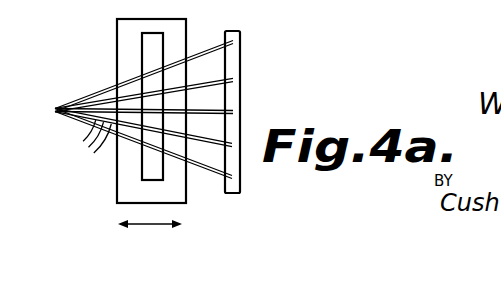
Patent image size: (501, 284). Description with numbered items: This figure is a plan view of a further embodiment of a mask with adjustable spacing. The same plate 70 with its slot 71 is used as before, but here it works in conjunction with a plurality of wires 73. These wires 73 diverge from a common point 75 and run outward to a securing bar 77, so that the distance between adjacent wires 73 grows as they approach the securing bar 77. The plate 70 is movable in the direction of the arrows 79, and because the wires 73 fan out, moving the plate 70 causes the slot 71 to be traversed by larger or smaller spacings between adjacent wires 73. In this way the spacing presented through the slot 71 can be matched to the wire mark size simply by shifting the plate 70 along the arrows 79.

The plate 70 is at (117, 27).
The slot 71 is at (143, 49).
The wires 73 is at (81, 140).
The common point 75 is at (55, 110).
The securing bar 77 is at (241, 97).
The arrows 79 is at (153, 222).